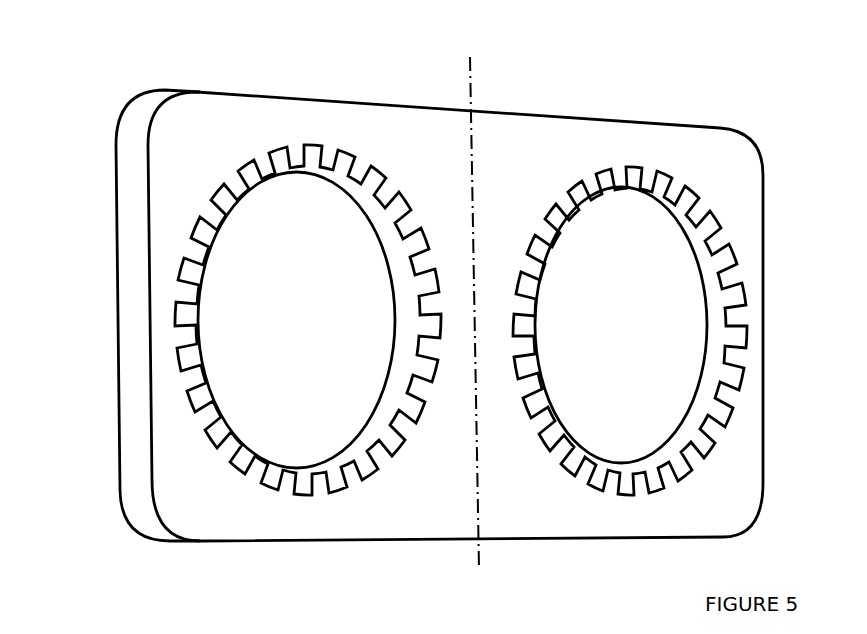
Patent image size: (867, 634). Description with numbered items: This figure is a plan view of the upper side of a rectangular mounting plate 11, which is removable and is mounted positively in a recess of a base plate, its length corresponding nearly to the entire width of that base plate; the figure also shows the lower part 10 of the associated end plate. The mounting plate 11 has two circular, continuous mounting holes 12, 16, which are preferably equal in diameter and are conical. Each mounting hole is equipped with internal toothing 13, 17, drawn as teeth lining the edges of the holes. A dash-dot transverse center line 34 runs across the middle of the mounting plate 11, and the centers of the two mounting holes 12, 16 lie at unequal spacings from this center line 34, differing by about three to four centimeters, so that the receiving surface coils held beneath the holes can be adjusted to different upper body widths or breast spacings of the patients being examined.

The lower part 10 is at (439, 275).
The mounting plate 11 is at (537, 155).
The mounting hole 12 is at (292, 230).
The internal toothing 13 is at (183, 272).
The mounting hole 16 is at (620, 207).
The internal toothing 17 is at (698, 248).
The transverse center line 34 is at (469, 297).